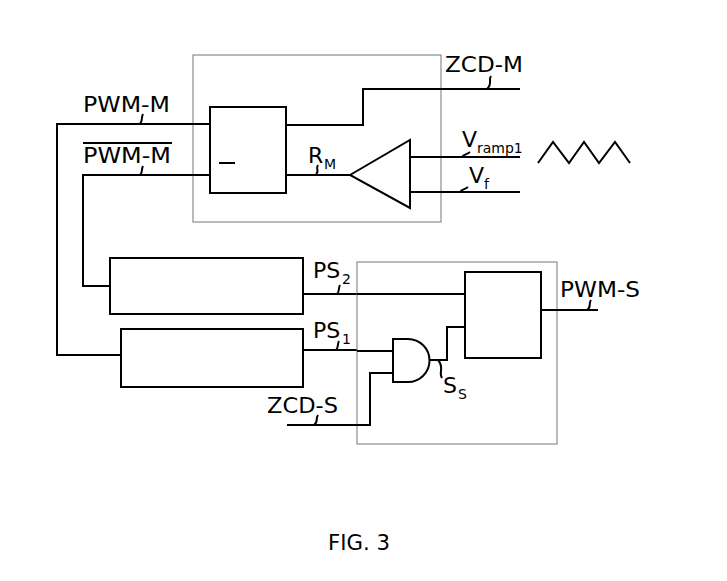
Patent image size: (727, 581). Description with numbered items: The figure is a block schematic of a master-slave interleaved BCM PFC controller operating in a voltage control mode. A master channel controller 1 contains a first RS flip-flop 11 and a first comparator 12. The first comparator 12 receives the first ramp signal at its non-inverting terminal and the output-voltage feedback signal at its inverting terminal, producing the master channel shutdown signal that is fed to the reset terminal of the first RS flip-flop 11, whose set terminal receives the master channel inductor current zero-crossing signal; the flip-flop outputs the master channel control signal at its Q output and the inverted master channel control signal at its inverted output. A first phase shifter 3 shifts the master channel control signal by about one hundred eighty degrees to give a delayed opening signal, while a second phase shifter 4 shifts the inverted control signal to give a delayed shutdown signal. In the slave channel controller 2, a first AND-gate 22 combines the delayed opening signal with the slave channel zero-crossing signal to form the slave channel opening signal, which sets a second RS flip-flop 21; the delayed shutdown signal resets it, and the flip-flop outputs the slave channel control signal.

The master channel controller 1 is at (359, 55).
The first RS flip-flop 11 is at (258, 107).
The first comparator 12 is at (397, 146).
The slave channel controller 2 is at (487, 445).
The second RS flip-flop 21 is at (498, 359).
The first AND-gate 22 is at (417, 377).
The first phase shifter 3 is at (274, 384).
The second phase shifter 4 is at (264, 311).